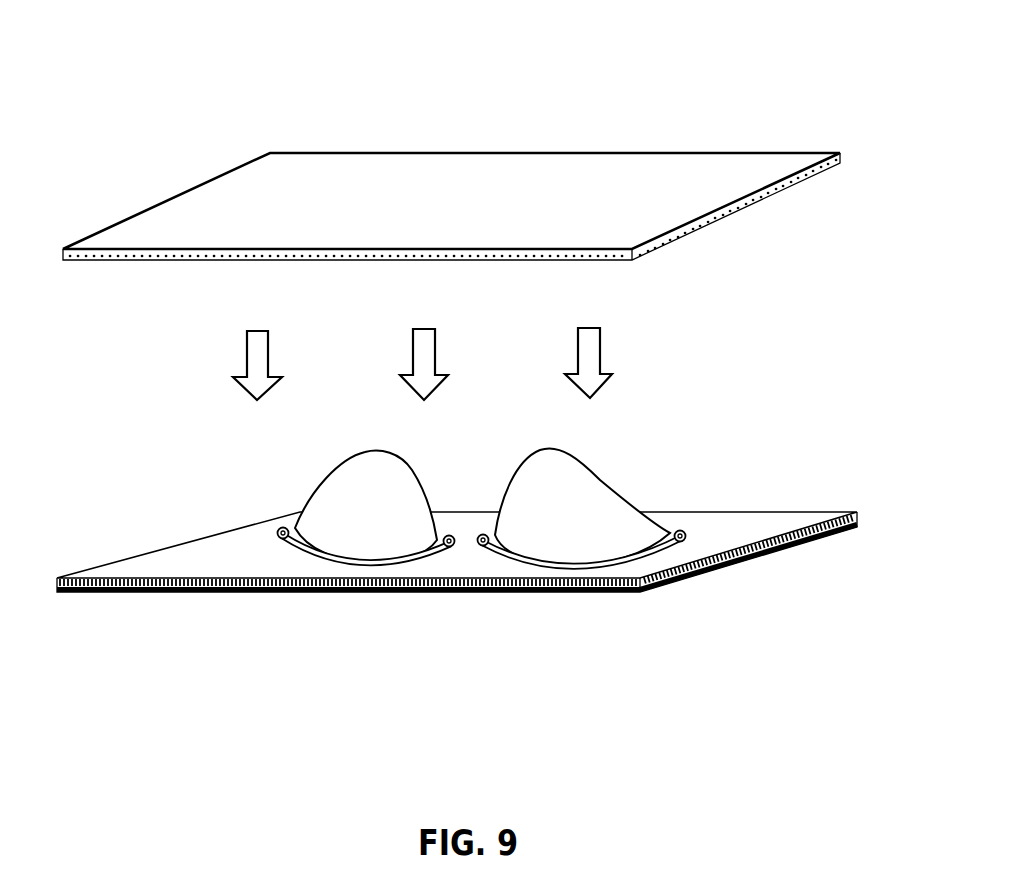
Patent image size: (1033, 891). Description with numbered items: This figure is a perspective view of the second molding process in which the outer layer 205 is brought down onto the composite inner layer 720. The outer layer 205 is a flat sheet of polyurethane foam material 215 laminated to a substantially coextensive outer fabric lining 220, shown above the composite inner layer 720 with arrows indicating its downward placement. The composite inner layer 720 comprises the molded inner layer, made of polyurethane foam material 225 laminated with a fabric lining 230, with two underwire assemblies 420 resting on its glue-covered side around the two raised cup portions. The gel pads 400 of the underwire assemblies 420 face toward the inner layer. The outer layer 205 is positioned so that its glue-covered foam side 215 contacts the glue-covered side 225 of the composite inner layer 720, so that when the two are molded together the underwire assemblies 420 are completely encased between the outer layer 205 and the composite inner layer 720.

The outer layer 205 is at (451, 155).
The outer fabric lining 220 is at (257, 197).
The polyurethane foam material 215 is at (718, 218).
The composite inner layer 720 is at (457, 546).
The polyurethane foam material 225 is at (203, 550).
The fabric lining 230 is at (172, 593).
The underwire assemblies 420 is at (390, 560).
The gel pads 400 is at (680, 543).